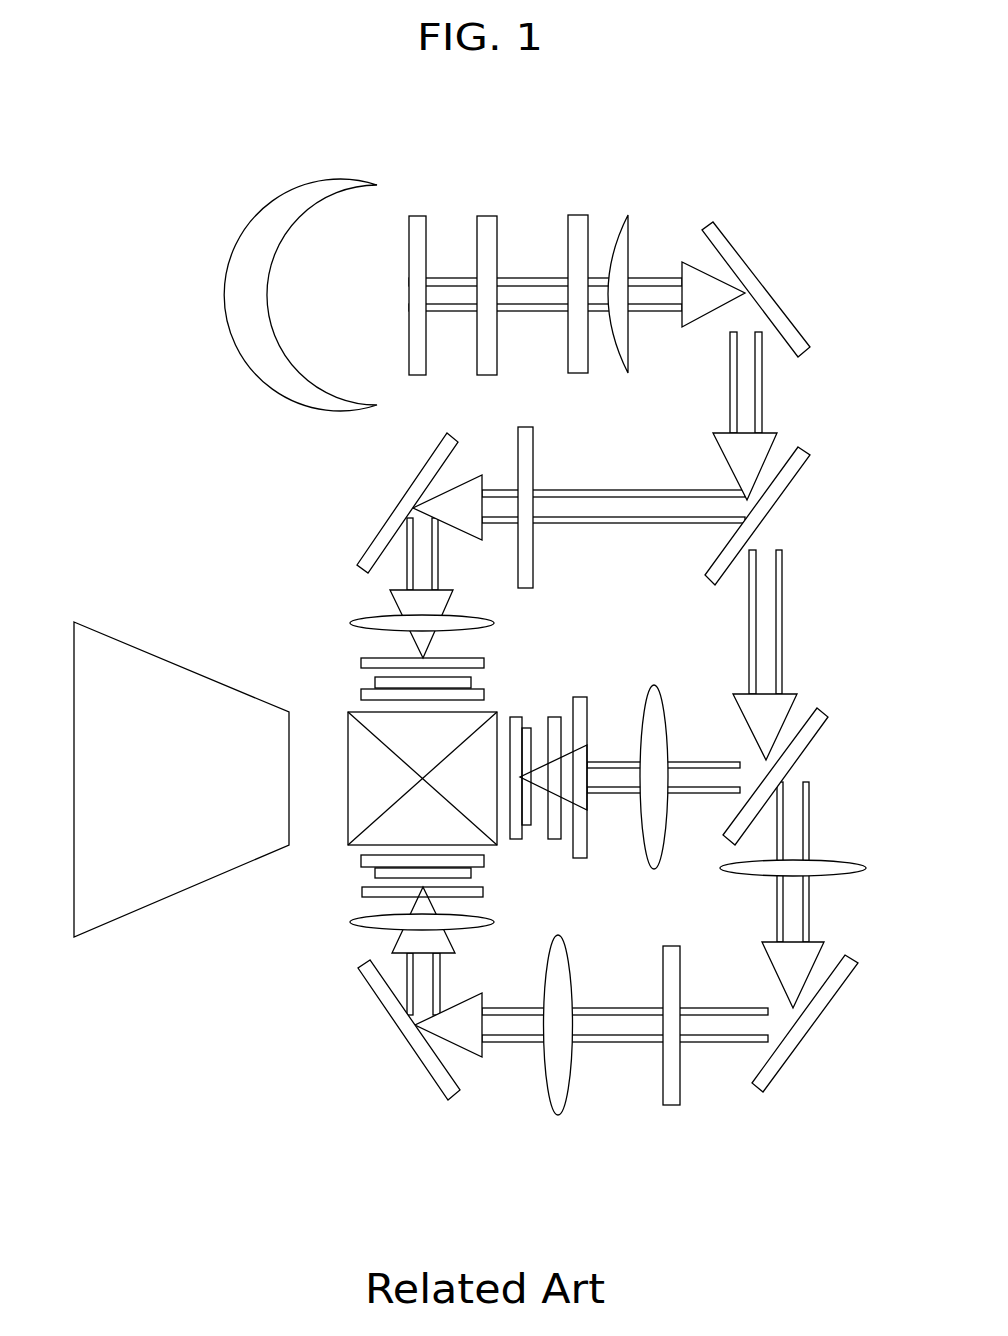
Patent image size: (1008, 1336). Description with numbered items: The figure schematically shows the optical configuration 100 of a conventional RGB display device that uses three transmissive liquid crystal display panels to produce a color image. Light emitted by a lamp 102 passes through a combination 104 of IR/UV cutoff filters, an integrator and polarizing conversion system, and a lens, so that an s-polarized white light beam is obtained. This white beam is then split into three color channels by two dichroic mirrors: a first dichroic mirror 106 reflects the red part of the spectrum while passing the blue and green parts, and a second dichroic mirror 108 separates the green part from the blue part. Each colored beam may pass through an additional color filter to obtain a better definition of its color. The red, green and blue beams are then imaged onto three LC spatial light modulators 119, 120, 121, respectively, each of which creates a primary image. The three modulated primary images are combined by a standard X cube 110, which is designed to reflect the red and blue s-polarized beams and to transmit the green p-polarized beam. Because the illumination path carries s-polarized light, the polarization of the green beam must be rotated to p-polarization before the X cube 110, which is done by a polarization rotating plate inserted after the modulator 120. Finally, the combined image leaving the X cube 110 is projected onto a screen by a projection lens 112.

The optical configuration 100 is at (801, 1142).
The lamp 102 is at (293, 202).
The combination of IR/UV cutoff filters, integrator, polarizing conversion system an 104 is at (509, 176).
The first dichroic mirror 106 is at (778, 505).
The second dichroic mirror 108 is at (800, 758).
The X cube 110 is at (348, 760).
The projection lens 112 is at (173, 660).
The LC spatial light modulator 119 is at (484, 664).
The LC spatial light modulator 120 is at (578, 697).
The LC spatial light modulator 121 is at (362, 890).